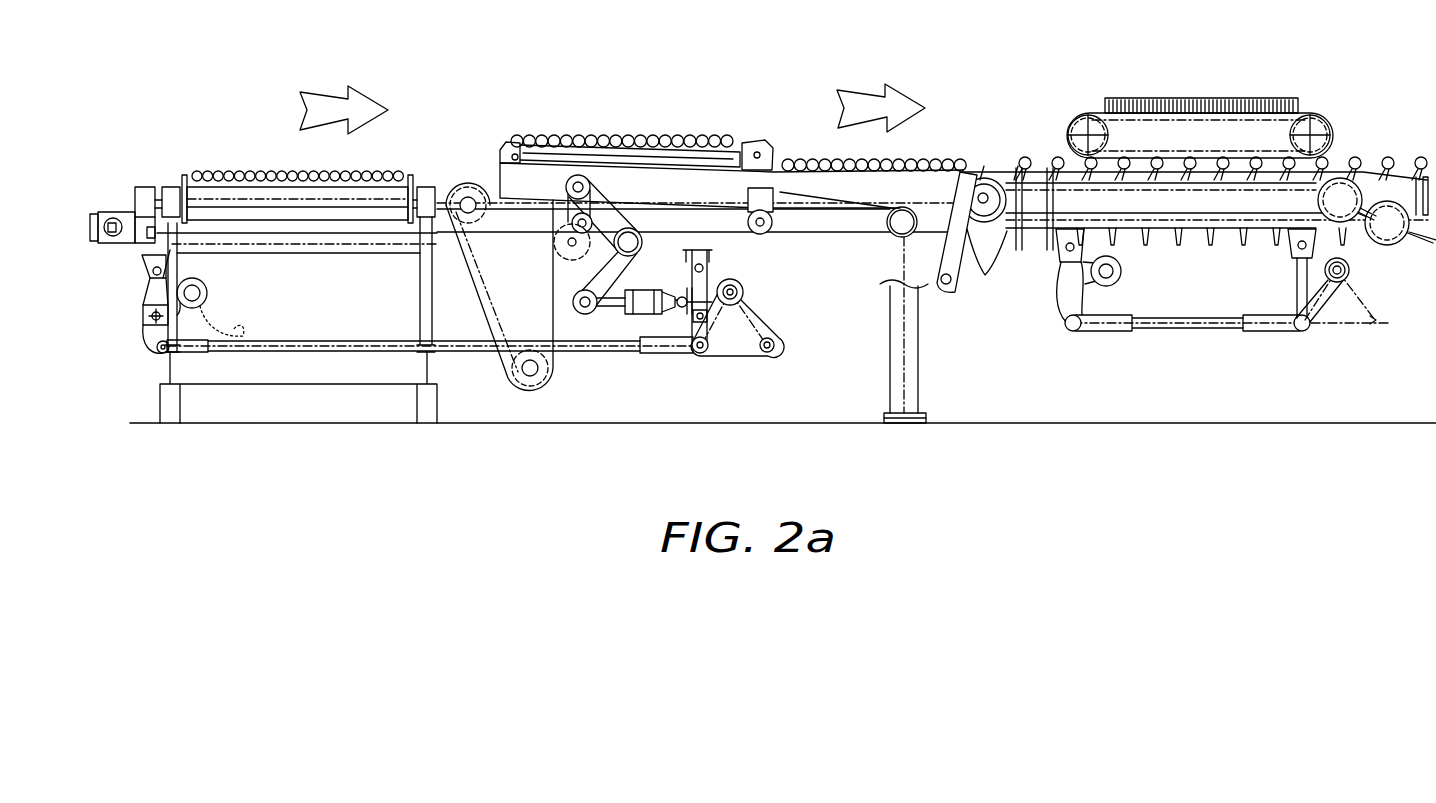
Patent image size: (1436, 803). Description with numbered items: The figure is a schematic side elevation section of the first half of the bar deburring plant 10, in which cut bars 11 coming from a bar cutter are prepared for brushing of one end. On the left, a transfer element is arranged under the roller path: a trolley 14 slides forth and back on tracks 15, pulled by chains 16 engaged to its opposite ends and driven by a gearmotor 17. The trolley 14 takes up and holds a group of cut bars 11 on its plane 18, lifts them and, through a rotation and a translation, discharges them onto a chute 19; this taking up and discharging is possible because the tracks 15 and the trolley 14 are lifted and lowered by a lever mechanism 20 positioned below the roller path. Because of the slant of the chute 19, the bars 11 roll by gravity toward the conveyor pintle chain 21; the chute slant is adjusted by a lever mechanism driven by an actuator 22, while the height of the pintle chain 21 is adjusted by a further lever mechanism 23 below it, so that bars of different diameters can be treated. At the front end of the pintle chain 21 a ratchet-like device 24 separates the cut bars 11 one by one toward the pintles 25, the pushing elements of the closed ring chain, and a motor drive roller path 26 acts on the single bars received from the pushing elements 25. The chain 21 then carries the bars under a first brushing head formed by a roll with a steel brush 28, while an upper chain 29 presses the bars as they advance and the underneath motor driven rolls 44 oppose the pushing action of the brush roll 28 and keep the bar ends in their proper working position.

The bar deburring plant 10 is at (878, 60).
The cut bars 11 is at (258, 170).
The trolley 14 is at (678, 153).
The tracks 15 is at (773, 233).
The chains 16 is at (528, 207).
The gearmotor 17 is at (112, 220).
The plane 18 is at (537, 152).
The chute 19 is at (773, 148).
The lever mechanism 20 is at (152, 338).
The conveyor pintle chain 21 is at (1197, 220).
The actuator 22 is at (578, 288).
The lever mechanism 23 is at (1065, 308).
The separating device 24 is at (950, 291).
The pintles 25 is at (1018, 163).
The motor drive roller path 26 is at (1045, 229).
The steel brush roll 28 is at (1190, 98).
The upper chain 29 is at (1078, 113).
The motor driven rolls 44 is at (1257, 210).